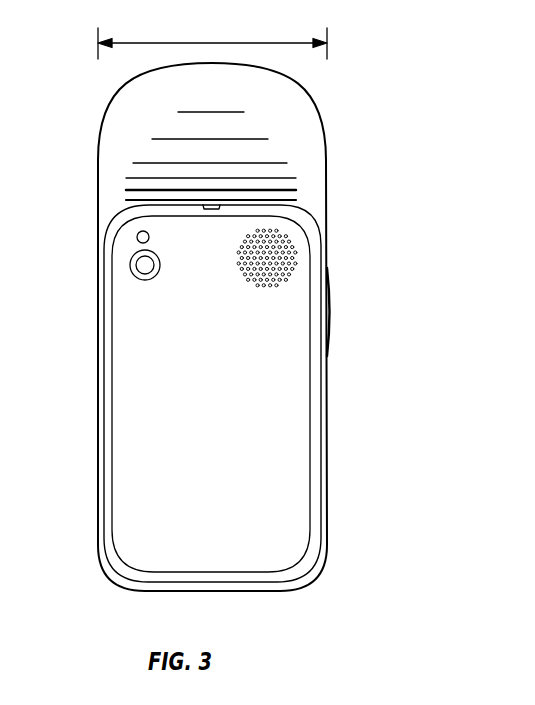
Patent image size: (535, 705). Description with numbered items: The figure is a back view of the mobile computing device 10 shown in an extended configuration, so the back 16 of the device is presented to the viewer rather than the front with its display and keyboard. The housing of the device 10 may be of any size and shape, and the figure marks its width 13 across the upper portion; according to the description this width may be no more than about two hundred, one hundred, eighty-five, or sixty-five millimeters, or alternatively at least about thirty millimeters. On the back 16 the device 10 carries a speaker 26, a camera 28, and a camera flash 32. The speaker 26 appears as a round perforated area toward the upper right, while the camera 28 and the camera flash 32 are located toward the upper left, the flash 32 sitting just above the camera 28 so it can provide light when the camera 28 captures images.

The device 10 is at (328, 91).
The width 13 is at (197, 43).
The back 16 is at (221, 437).
The speaker 26 is at (293, 251).
The camera 28 is at (140, 267).
The camera flash 32 is at (137, 236).